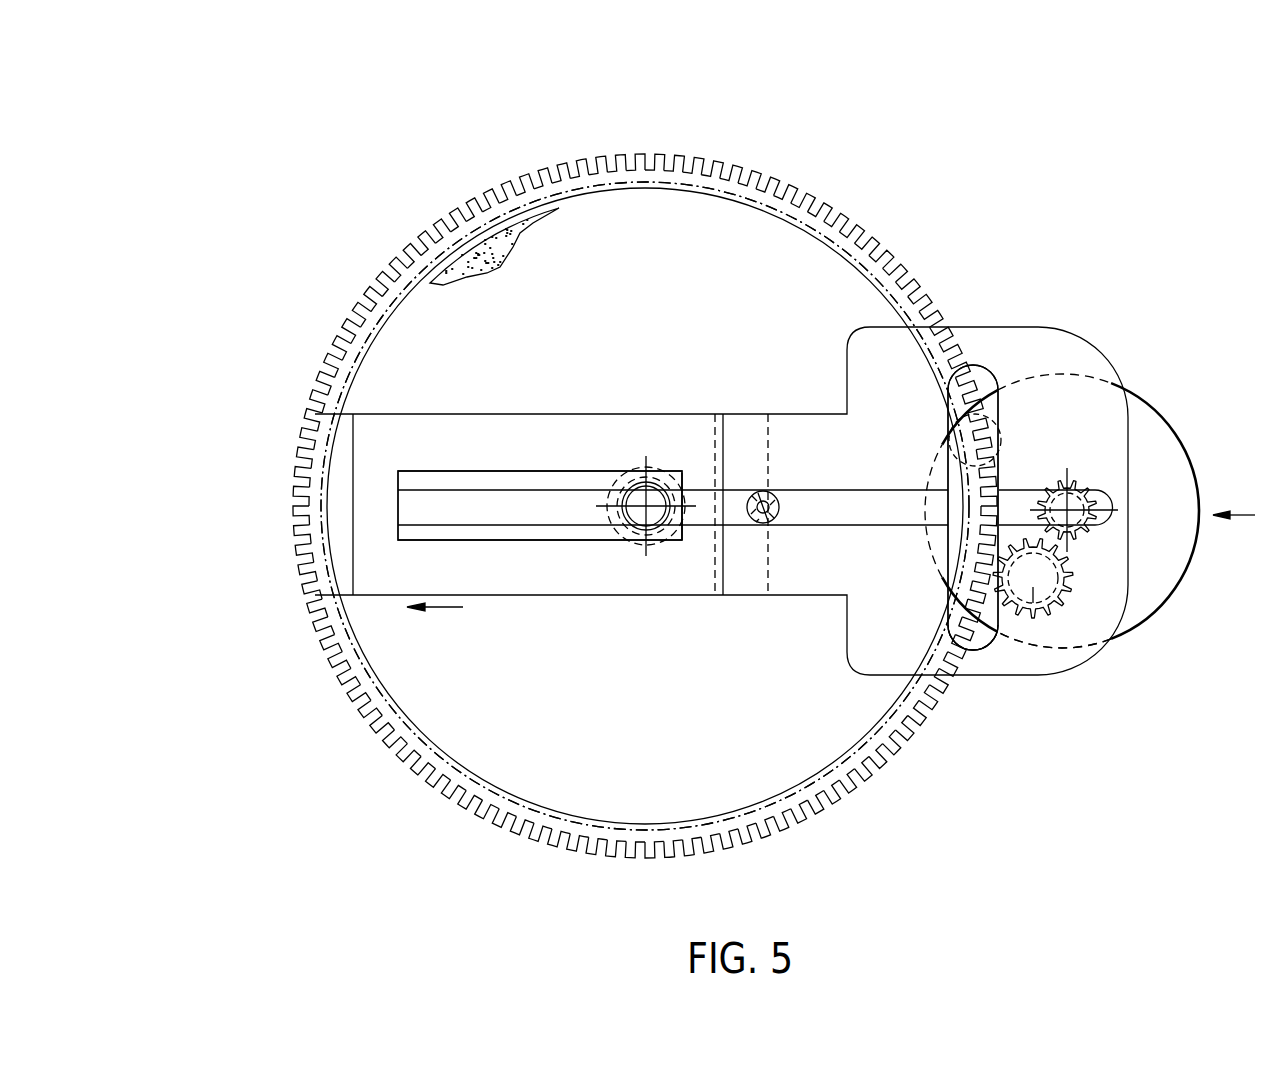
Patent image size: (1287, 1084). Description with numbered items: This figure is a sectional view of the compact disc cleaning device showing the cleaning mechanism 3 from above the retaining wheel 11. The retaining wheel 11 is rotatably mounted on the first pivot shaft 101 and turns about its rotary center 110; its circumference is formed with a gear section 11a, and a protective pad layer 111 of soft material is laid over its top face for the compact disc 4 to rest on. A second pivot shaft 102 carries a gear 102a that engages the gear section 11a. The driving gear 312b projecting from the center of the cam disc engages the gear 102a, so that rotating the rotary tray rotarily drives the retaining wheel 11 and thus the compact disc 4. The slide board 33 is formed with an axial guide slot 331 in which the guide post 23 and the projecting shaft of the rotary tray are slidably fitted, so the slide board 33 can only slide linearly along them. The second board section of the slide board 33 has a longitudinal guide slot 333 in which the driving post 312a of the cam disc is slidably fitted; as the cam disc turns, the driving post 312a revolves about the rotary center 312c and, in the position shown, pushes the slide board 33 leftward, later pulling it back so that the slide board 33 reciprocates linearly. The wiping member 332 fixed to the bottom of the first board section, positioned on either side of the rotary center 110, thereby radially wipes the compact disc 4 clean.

The cleaning mechanism 3 is at (1146, 381).
The compact disc 4 is at (806, 791).
The retaining wheel 11 is at (873, 245).
The gear section 11a is at (990, 647).
The guide post 23 is at (755, 490).
The slide board 33 is at (868, 643).
The first pivot shaft 101 is at (629, 468).
The second pivot shaft 102 is at (1033, 620).
The gear 102a is at (1087, 647).
The rotary center 110 is at (646, 508).
The protective pad layer 111 is at (472, 262).
The driving post 312a is at (1005, 432).
The driving gear 312b is at (1070, 535).
The rotary center 312c is at (1067, 493).
The axial guide slot 331 is at (589, 524).
The wiping member 332 is at (333, 540).
The longitudinal guide slot 333 is at (950, 428).